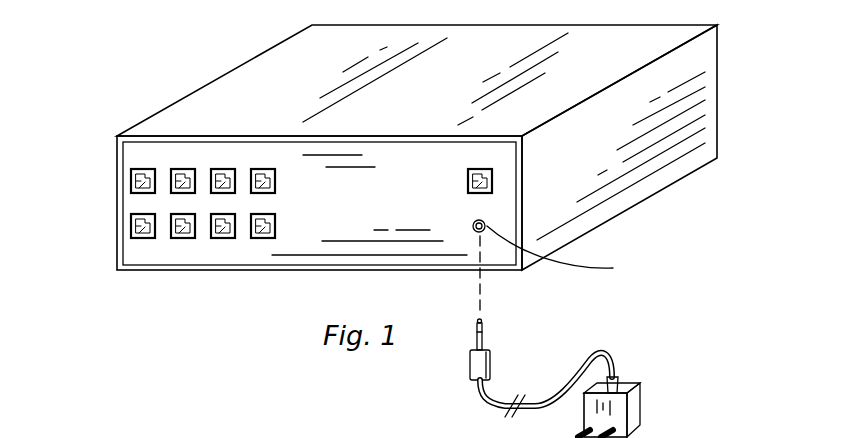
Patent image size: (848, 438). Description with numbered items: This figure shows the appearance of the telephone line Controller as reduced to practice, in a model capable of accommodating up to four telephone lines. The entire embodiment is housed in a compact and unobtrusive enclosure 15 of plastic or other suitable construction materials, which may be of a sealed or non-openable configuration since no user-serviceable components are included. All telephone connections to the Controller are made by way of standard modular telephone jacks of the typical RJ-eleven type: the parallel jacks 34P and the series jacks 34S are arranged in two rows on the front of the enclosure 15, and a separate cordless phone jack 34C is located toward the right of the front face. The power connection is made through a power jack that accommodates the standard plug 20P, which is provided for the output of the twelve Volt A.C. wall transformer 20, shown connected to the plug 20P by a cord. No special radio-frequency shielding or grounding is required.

The housing / base unit 15 is at (642, 165).
The parallel modular telephone jack 34P is at (262, 168).
The series modular telephone jack 34S is at (265, 238).
The cordless phone modular telephone jack 34C is at (490, 190).
The standard plug 20P is at (487, 362).
The wall transformer 20 is at (640, 403).